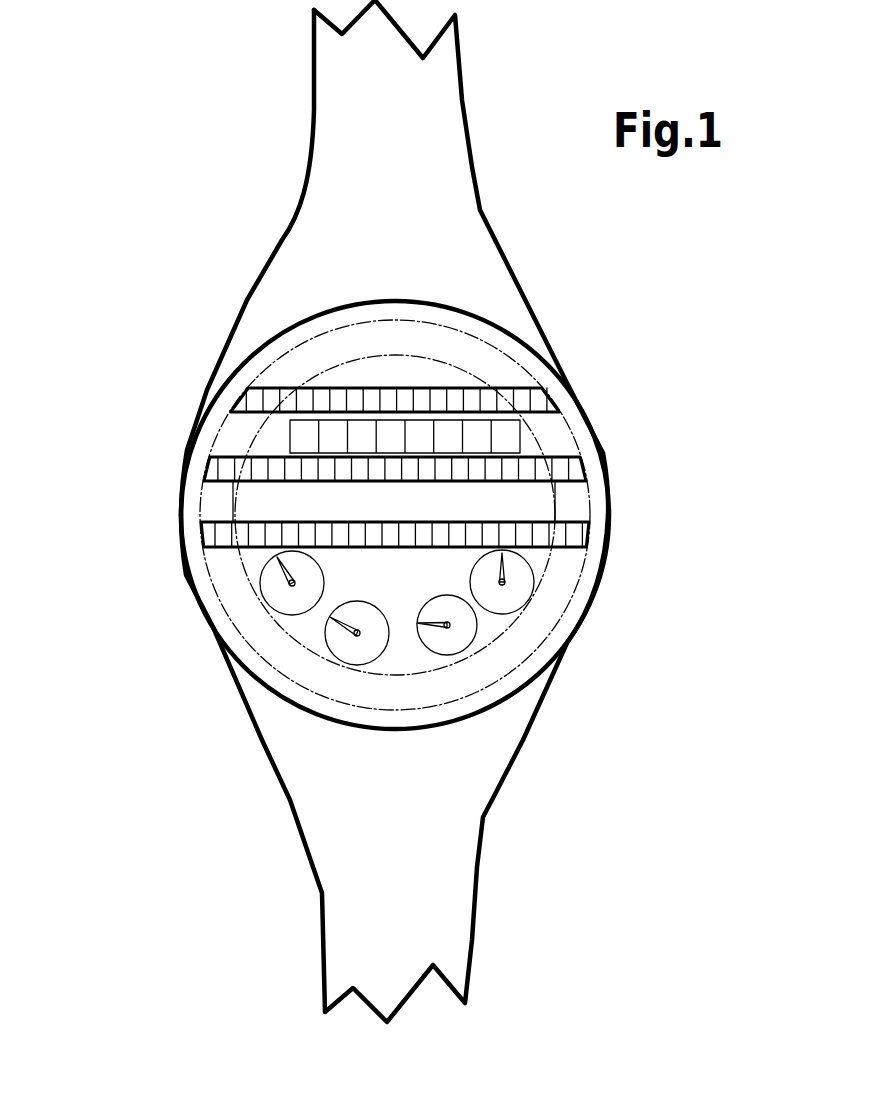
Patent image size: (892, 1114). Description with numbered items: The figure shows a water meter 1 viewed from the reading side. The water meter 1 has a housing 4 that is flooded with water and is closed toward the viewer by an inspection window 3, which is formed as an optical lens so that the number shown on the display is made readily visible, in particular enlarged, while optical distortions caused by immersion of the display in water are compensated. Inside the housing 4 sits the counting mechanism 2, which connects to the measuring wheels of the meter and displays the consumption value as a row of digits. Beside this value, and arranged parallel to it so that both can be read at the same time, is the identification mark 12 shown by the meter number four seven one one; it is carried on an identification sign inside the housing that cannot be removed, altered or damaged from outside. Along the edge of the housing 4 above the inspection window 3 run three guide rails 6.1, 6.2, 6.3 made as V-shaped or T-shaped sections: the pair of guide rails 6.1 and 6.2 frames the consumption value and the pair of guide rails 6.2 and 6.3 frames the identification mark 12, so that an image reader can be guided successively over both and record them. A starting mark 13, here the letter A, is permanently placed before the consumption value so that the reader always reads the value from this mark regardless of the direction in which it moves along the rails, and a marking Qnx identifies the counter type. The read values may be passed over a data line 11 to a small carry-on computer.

The water meter 1 is at (617, 457).
The counting mechanism 2 is at (483, 434).
The inspection window 3 is at (415, 362).
The housing 4 is at (553, 583).
The guide rail 6.1 is at (307, 390).
The guide rail 6.2 is at (287, 473).
The guide rail 6.3 is at (247, 533).
The data line 11 is at (270, 502).
The identification mark 12 is at (530, 501).
The starting mark 13 is at (258, 440).